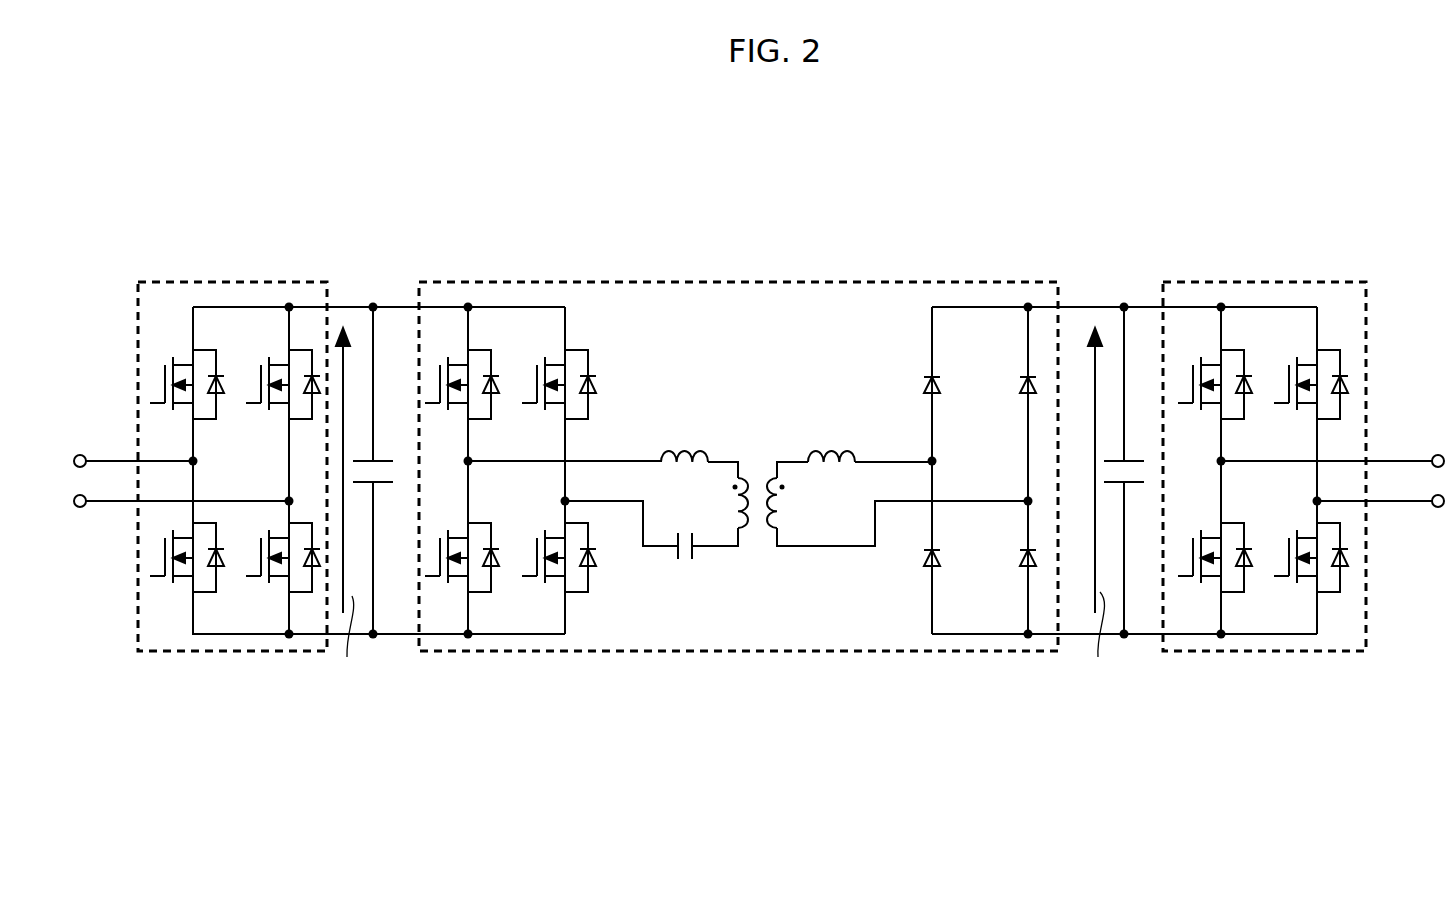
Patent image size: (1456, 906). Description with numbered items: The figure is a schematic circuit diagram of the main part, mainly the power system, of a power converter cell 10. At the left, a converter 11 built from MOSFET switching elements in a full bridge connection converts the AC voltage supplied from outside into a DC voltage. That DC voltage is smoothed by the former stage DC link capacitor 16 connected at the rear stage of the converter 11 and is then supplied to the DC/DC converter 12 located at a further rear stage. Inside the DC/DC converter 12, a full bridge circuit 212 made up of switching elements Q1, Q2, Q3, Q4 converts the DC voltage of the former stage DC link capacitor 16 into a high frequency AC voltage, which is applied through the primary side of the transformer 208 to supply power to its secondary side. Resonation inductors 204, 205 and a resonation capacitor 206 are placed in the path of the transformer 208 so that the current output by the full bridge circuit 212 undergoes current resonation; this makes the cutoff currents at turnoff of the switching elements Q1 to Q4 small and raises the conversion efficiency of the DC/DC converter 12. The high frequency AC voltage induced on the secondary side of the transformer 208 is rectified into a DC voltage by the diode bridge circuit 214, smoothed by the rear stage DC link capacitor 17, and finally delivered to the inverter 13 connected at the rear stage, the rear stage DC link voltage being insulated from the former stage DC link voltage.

The power converter cell 10 is at (1001, 719).
The converter 11 is at (157, 282).
The DC/DC converter 12 is at (1013, 282).
The inverter 13 is at (1326, 282).
The former stage DC link capacitor 16 is at (387, 455).
The rear stage DC link capacitor 17 is at (1135, 455).
The full bridge circuit 212 is at (548, 285).
The diode bridge circuit 214 is at (965, 285).
The resonation inductor 204 is at (682, 447).
The resonation inductor 205 is at (830, 447).
The resonation capacitor 206 is at (687, 562).
The transformer 208 is at (762, 548).
The switching element Q1 is at (462, 362).
The switching element Q2 is at (461, 536).
The switching element Q3 is at (558, 362).
The switching element Q4 is at (558, 536).